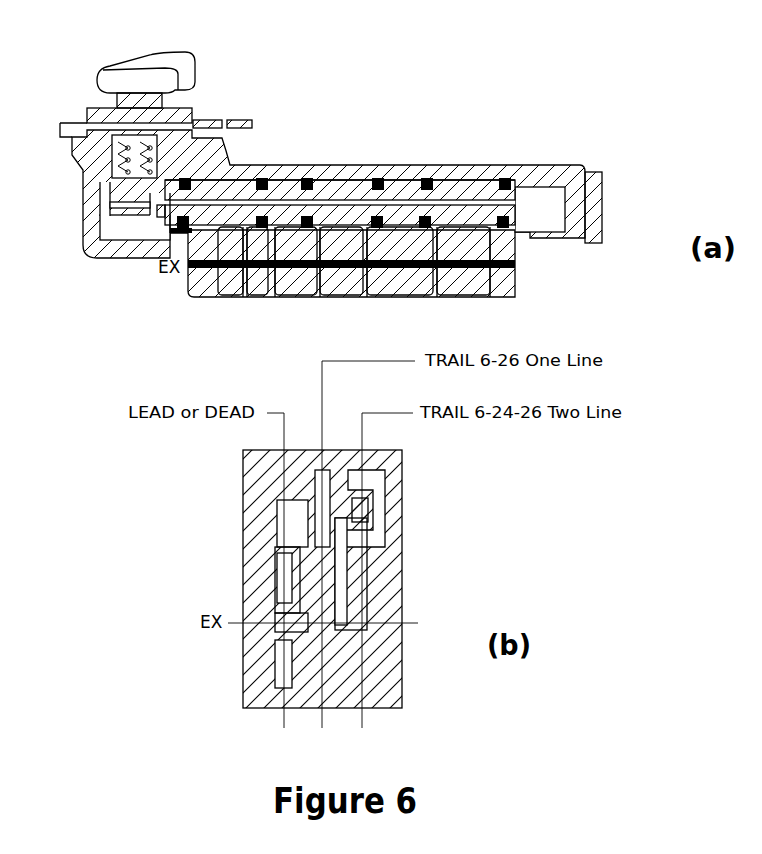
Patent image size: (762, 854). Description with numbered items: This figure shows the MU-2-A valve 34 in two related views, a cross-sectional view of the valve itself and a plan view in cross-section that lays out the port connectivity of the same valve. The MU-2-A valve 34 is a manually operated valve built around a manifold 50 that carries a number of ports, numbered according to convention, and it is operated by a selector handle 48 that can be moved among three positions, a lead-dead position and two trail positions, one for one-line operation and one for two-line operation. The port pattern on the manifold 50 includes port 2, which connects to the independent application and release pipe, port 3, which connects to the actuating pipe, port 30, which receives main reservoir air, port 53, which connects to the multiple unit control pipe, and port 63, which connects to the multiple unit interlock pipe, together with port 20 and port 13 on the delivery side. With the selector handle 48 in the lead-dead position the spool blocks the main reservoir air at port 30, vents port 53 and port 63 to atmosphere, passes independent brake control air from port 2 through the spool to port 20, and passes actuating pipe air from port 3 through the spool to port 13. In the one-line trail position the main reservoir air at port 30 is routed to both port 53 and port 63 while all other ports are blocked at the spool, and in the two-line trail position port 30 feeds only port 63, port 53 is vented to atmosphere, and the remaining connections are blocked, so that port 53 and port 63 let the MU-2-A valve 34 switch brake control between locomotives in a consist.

The MU-2-A valve 34 is at (371, 128).
The selector handle 48 is at (185, 62).
The manifold 50 is at (520, 250).
The port 53 is at (418, 509).
The port 63 is at (418, 538).
The port 30 is at (418, 480).
The port 2 is at (418, 566).
The port 20 is at (228, 594).
The port 3 is at (228, 651).
The port 13 is at (228, 678).